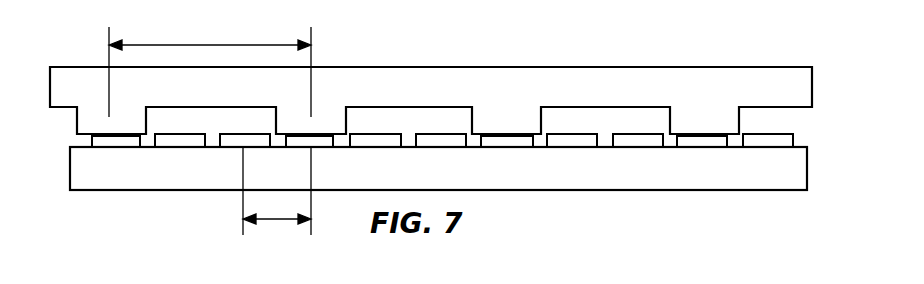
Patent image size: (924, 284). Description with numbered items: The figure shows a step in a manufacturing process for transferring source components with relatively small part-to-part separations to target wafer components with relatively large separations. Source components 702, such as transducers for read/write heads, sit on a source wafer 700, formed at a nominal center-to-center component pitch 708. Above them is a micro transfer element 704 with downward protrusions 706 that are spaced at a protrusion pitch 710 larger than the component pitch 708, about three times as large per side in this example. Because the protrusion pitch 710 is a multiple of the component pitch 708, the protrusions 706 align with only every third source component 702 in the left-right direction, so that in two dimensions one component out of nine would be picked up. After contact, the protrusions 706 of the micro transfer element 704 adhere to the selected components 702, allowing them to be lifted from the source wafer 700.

The source wafer 700 is at (173, 191).
The source components 702 is at (92, 139).
The micro transfer element 704 is at (413, 66).
The protrusions 706 is at (275, 121).
The component pitch 708 is at (278, 222).
The protrusion pitch 710 is at (213, 44).